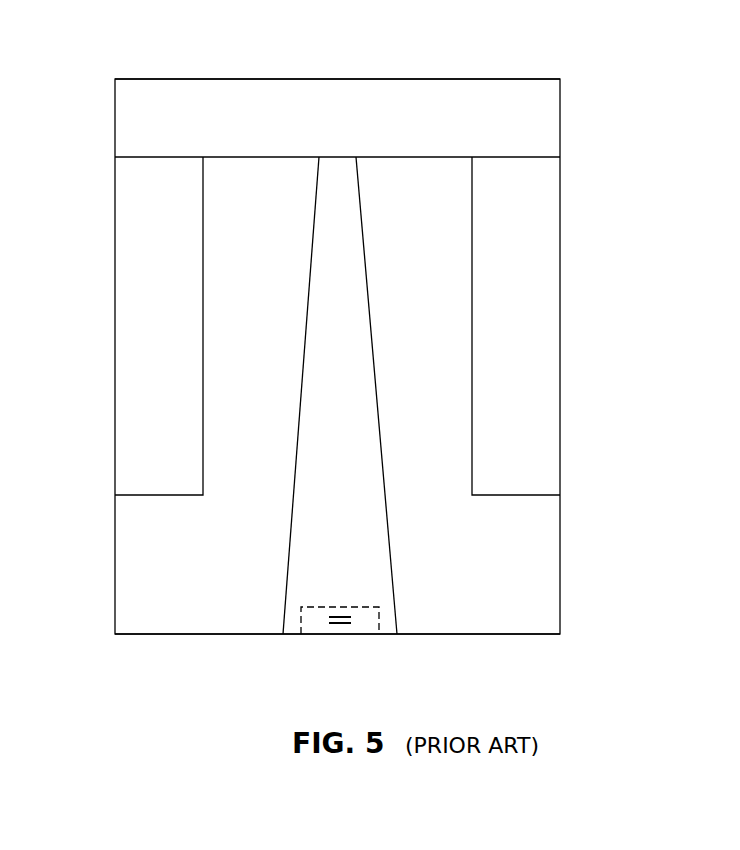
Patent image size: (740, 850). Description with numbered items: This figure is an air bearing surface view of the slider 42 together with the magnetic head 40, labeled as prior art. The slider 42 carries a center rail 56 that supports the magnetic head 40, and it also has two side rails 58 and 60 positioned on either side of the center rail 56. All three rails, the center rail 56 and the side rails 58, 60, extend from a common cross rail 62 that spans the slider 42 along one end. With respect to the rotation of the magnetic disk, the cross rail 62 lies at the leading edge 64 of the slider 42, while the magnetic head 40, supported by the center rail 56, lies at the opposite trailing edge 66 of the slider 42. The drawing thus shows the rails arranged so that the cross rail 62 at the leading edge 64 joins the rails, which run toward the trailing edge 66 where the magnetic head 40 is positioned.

The magnetic head 40 is at (318, 627).
The slider 42 is at (115, 583).
The center rail 56 is at (325, 270).
The side rail 58 is at (131, 238).
The side rail 60 is at (544, 238).
The cross rail 62 is at (260, 92).
The leading edge 64 is at (437, 79).
The trailing edge 66 is at (460, 634).